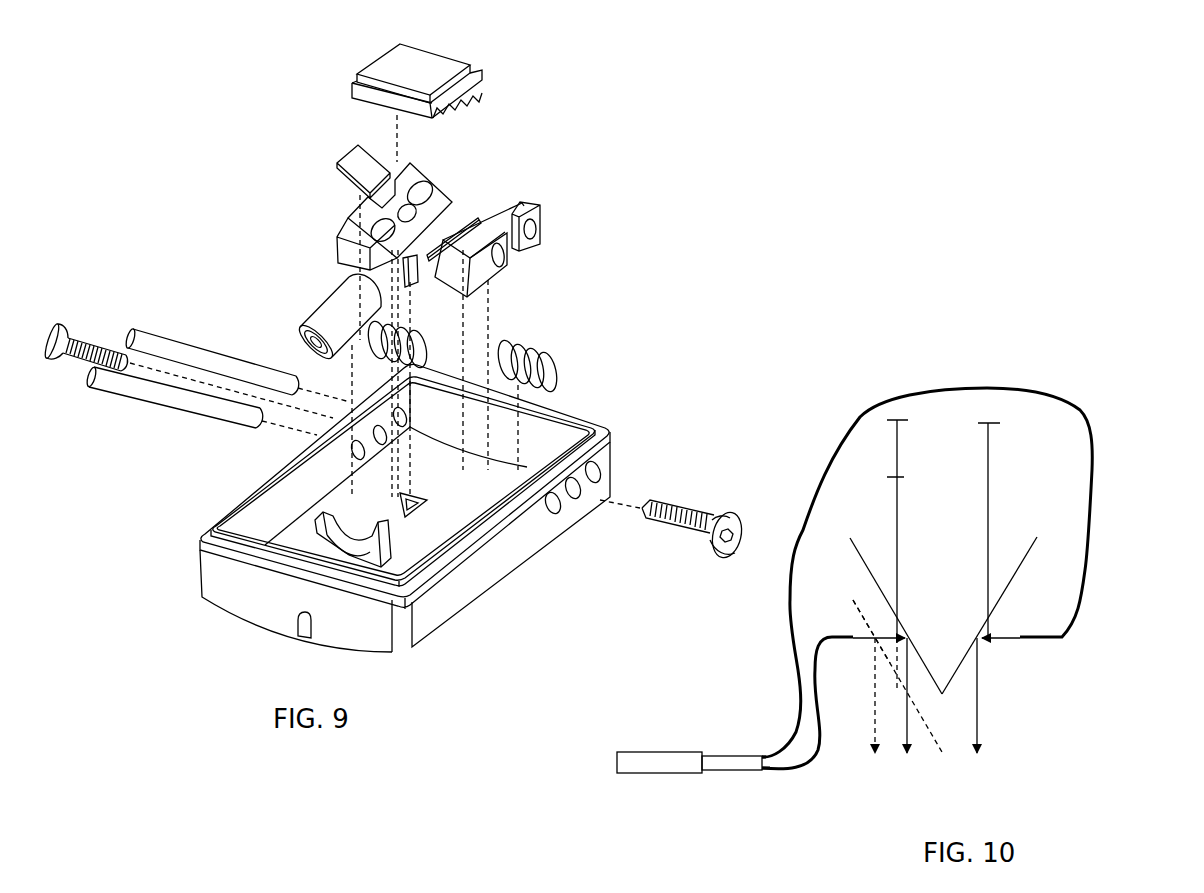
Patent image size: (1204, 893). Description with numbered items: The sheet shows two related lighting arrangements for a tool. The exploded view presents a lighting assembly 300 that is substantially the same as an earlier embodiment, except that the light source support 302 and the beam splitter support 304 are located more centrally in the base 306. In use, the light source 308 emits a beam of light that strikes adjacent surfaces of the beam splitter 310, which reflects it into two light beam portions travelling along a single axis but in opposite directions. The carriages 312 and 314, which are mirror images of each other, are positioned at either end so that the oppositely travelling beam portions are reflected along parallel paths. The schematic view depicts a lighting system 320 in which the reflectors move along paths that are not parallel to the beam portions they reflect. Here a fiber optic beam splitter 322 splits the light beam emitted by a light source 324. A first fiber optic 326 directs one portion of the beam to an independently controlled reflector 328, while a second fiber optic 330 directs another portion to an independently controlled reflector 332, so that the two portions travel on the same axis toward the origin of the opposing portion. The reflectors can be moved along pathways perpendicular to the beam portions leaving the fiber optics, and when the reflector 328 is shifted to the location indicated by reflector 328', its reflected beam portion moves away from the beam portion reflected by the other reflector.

In FIG. 9, the lighting assembly 300 is at (165, 240).
In FIG. 9, the light source support 302 is at (312, 535).
In FIG. 9, the beam splitter support 304 is at (413, 500).
In FIG. 9, the base 306 is at (200, 558).
In FIG. 9, the light source 308 is at (323, 300).
In FIG. 9, the beam splitter 310 is at (414, 284).
In FIG. 9, the carriage 312 is at (330, 247).
In FIG. 9, the carriage 314 is at (537, 241).
In FIG. 10, the lighting system 320 is at (1123, 397).
In FIG. 10, the fiber optic beam splitter 322 is at (725, 771).
In FIG. 10, the light source 324 is at (665, 752).
In FIG. 10, the first fiber optic 326 is at (823, 757).
In FIG. 10, the independently controlled reflector 328 is at (885, 588).
In FIG. 10, the independently controlled reflector 328' is at (848, 615).
In FIG. 10, the second fiber optic 330 is at (1093, 548).
In FIG. 10, the independently controlled reflector 332 is at (1035, 538).